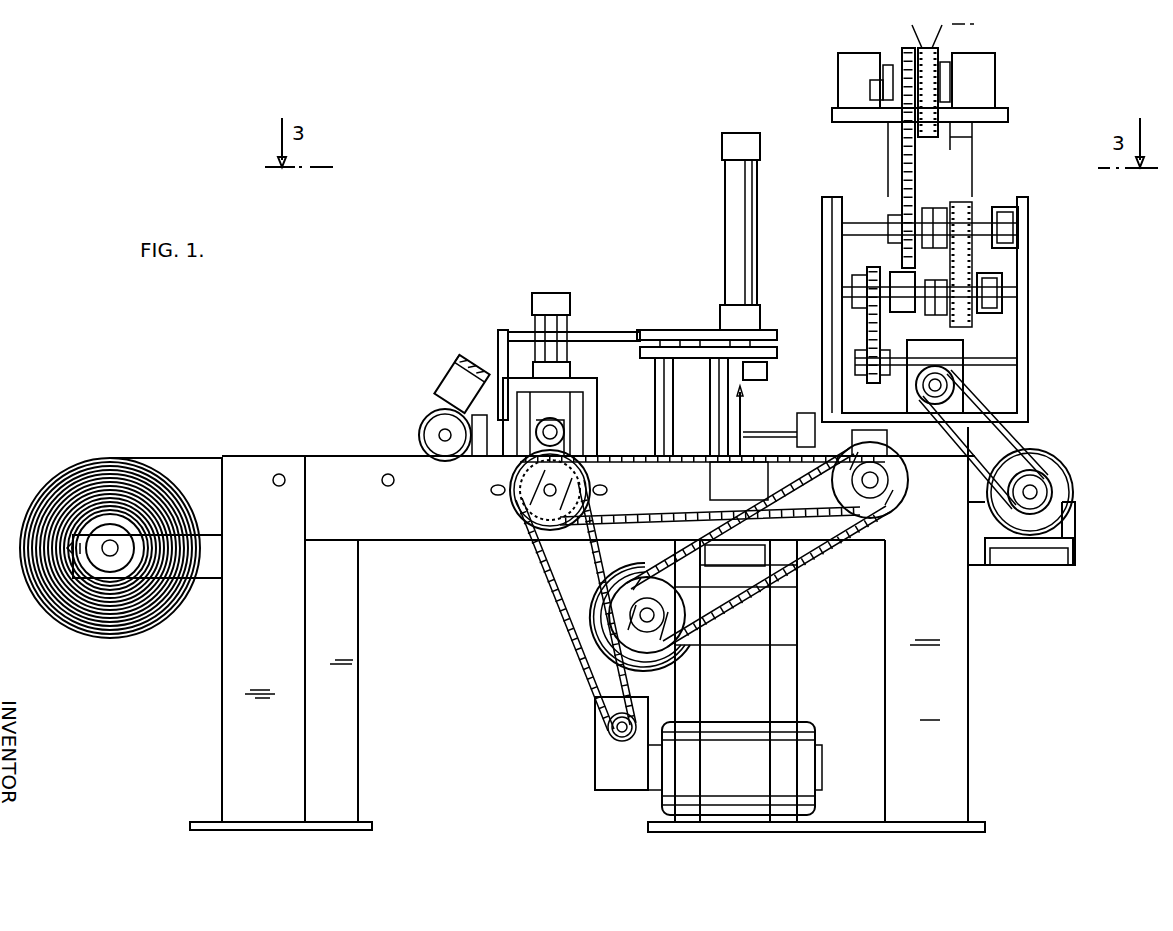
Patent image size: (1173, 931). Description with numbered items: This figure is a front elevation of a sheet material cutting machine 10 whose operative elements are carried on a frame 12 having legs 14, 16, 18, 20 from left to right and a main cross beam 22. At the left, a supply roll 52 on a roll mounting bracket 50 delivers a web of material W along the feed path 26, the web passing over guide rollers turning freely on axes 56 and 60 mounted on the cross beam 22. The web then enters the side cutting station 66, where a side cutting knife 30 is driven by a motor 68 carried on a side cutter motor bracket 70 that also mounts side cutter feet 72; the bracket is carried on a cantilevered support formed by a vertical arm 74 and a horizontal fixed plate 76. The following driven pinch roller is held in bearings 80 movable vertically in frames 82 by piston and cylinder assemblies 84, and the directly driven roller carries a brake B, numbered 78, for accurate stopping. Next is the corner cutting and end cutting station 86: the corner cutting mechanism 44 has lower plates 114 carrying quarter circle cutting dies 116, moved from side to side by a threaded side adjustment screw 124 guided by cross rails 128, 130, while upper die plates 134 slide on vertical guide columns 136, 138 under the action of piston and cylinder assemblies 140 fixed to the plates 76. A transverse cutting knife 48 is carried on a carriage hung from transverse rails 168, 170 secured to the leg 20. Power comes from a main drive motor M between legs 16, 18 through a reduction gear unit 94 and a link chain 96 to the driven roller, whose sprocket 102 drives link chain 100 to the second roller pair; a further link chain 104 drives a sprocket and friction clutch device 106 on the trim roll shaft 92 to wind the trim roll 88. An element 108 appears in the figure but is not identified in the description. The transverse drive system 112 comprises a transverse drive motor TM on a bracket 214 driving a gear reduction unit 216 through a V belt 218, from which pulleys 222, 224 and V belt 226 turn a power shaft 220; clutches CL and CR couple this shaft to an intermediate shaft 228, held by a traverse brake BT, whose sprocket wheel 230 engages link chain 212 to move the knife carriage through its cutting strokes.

The sheet material cutting machine 10 is at (479, 170).
The frame 12 is at (428, 530).
The leg 14 is at (222, 738).
The leg 16 is at (690, 812).
The leg 18 is at (785, 812).
The leg 20 is at (968, 800).
The main cross beam 22 is at (344, 462).
The feed path 26 is at (203, 437).
The side cutting knife 30 is at (428, 430).
The corner cutting mechanism 44 is at (721, 255).
The transverse cutting knife 48 is at (743, 400).
The roll mounting bracket 50 is at (210, 567).
The supply roll 52 is at (40, 498).
The axis 56 is at (279, 487).
The axis 60 is at (387, 487).
The side cutting station 66 is at (411, 443).
The motor 68 is at (448, 375).
The side cutter motor bracket 70 is at (479, 366).
The side cutter feet 72 is at (505, 452).
The vertical arm 74 is at (500, 345).
The horizontal fixed plate 76 is at (590, 330).
The brake 78 is at (579, 490).
The bearing 80 is at (562, 428).
The frame 82 is at (503, 452).
The piston and cylinder assembly 84 is at (553, 293).
The corner cutting and end cutting station 86 is at (703, 307).
The trim roll 88 is at (605, 650).
The trim roll shaft 92 is at (652, 620).
The reduction gear unit 94 is at (598, 786).
The link chain 96 is at (570, 626).
The link chain 100 is at (640, 458).
The sprocket 102 is at (578, 498).
The link chain 104 is at (725, 590).
The sprocket wheel and friction clutch device 106 is at (690, 625).
The pulley 108 is at (890, 504).
The transverse drive system 112 is at (1041, 343).
The lower plate 114 is at (700, 503).
The quarter circle cutting die 116 is at (767, 373).
The side adjustment screw 124 is at (740, 556).
The cross rail 128 is at (705, 528).
The cross rail 130 is at (793, 566).
The upper die plate 134 is at (638, 330).
The vertical support and guide column 136 is at (656, 390).
The vertical support and guide column 138 is at (712, 395).
The piston and cylinder assembly 140 is at (726, 198).
The transverse rail 168 is at (846, 53).
The transverse rail 170 is at (988, 75).
The link chain 212 is at (903, 166).
The bracket 214 is at (1068, 553).
The gear reduction unit 216 is at (952, 378).
The V belt 218 is at (1016, 452).
The power shaft 220 is at (826, 293).
The pulley 222 is at (862, 370).
The pulley 224 is at (855, 286).
The V belt 226 is at (862, 334).
The intermediate shaft 228 is at (1030, 236).
The sprocket wheel 230 is at (896, 222).
The brake B is at (595, 492).
The web material W is at (144, 457).
The main drive motor M is at (744, 776).
The transverse drive motor TM is at (1056, 480).
The traverse brake BT is at (1013, 226).
The clutch CR is at (898, 278).
The clutch CL is at (1002, 290).